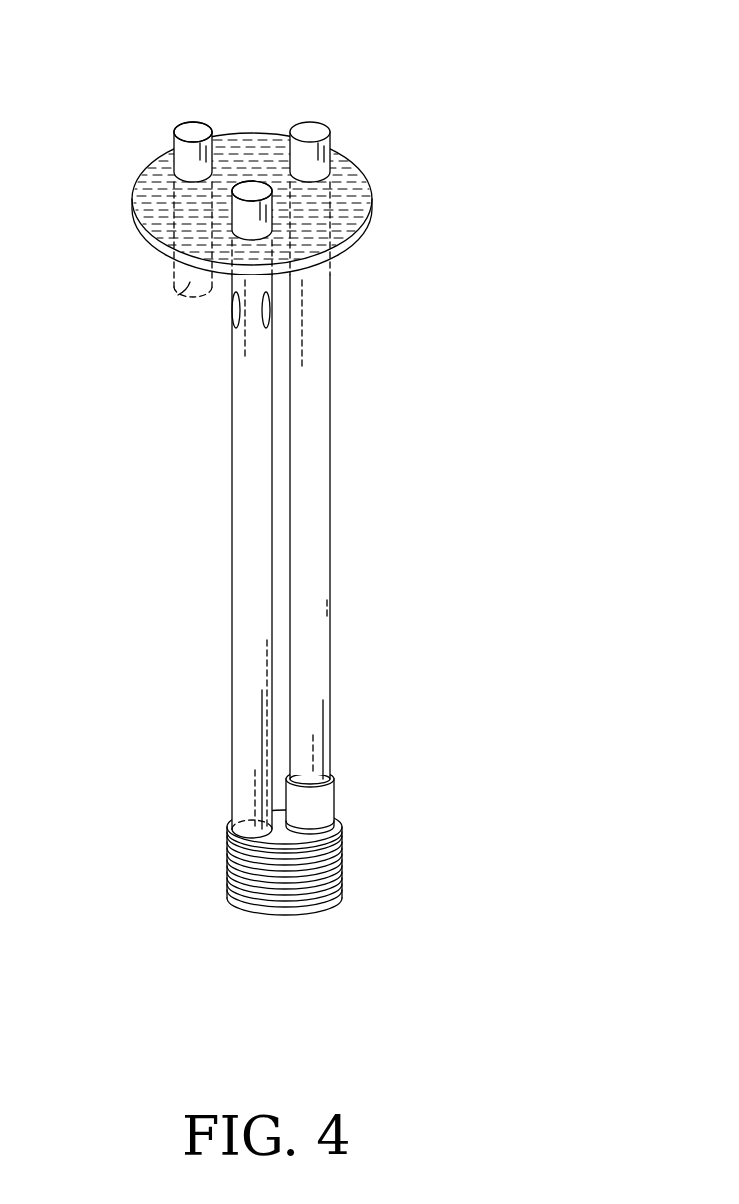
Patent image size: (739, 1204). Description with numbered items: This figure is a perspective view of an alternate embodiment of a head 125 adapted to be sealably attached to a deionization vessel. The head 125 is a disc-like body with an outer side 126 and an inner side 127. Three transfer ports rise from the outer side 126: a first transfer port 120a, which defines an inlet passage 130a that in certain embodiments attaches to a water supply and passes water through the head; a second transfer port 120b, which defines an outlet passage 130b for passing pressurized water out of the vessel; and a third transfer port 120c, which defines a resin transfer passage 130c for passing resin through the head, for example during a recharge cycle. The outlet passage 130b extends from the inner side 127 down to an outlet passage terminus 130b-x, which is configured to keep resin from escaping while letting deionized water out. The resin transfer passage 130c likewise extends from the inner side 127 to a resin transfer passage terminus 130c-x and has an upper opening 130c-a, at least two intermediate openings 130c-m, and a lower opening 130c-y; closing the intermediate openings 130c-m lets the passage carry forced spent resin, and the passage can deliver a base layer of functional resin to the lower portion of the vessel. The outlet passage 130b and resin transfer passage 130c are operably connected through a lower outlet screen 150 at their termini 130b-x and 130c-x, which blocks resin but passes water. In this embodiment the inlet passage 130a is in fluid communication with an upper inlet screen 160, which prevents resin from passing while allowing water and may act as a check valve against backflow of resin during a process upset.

The head 125 is at (538, 193).
The outer side 126 is at (155, 180).
The inner side 127 is at (148, 245).
The first transfer port 120a is at (185, 163).
The second transfer port 120b is at (317, 160).
The third transfer port 120c is at (243, 215).
The inlet passage 130a is at (193, 125).
The outlet passage 130b is at (317, 412).
The resin transfer passage 130c is at (252, 253).
The upper opening 130c-a is at (248, 182).
The intermediate opening 130c-m is at (266, 328).
The resin transfer passage terminus 130c-x is at (225, 820).
The lower opening 130c-y is at (243, 905).
The outlet passage terminus 130b-x is at (323, 817).
The lower outlet screen 150 is at (338, 863).
The upper inlet screen 160 is at (187, 283).